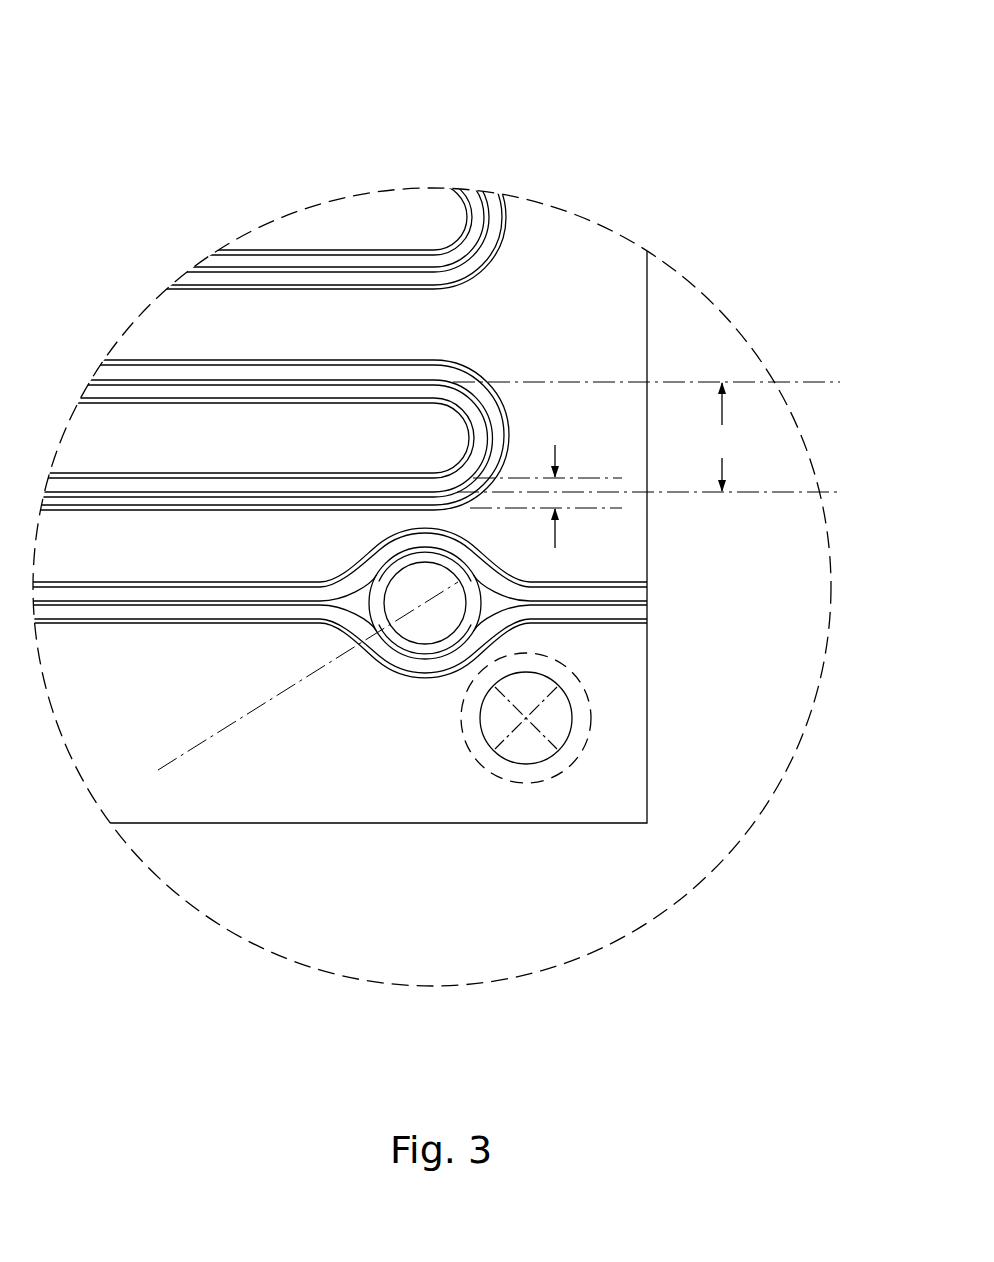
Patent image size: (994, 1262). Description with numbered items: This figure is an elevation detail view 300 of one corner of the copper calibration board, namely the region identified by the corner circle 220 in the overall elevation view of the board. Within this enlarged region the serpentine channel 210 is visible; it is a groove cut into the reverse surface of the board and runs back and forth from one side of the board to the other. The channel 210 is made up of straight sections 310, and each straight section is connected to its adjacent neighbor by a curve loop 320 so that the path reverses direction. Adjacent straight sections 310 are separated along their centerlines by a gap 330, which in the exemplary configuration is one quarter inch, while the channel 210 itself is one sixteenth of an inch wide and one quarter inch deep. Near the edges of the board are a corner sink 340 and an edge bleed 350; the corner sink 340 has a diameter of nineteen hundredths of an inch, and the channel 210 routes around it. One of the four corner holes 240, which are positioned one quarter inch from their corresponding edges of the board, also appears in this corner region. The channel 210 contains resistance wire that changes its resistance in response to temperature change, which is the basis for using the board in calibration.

The elevation detail view 300 is at (96, 65).
The corner circle 220 is at (148, 295).
The serpentine channel 210 is at (173, 470).
The straight sections 310 is at (402, 352).
The curve loop 320 is at (480, 275).
The gap 330 is at (848, 382).
The corner sink 340 is at (380, 662).
The edge bleed 350 is at (593, 625).
The corner holes 240 is at (575, 713).